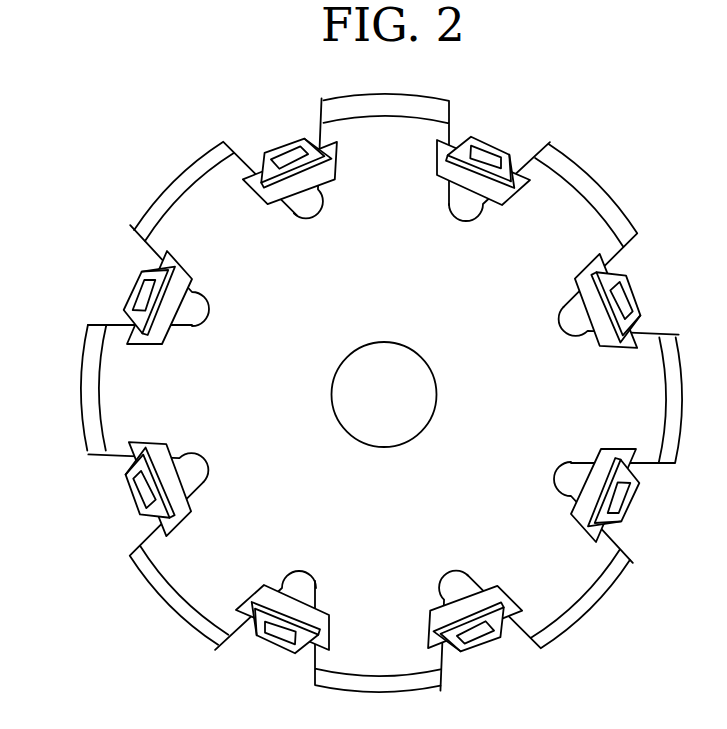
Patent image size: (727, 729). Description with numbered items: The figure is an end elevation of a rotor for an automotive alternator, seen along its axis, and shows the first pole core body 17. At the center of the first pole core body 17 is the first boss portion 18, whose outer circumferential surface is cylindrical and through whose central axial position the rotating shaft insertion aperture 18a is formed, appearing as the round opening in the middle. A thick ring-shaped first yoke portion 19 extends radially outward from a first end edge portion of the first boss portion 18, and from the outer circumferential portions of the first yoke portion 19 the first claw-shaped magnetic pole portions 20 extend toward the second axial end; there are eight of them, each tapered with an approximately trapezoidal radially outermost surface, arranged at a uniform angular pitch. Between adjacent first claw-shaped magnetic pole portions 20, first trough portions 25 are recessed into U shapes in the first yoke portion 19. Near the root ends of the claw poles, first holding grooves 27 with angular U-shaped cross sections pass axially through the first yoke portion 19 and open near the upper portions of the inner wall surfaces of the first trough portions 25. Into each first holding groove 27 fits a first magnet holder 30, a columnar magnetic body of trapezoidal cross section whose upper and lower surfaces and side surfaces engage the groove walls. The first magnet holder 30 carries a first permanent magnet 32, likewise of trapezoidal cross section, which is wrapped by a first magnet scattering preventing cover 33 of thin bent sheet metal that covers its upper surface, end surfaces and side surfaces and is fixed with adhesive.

The first pole core body 17 is at (140, 202).
The first boss portion 18 is at (290, 350).
The rotating shaft insertion aperture 18a is at (358, 439).
The first yoke portion 19 is at (207, 379).
The first claw-shaped magnetic pole portions 20 is at (82, 390).
The first trough portions 25 is at (148, 434).
The first holding grooves 27 is at (138, 536).
The first magnet holder 30 is at (522, 178).
The first permanent magnet 32 is at (517, 172).
The first magnet scattering preventing cover 33 is at (487, 137).